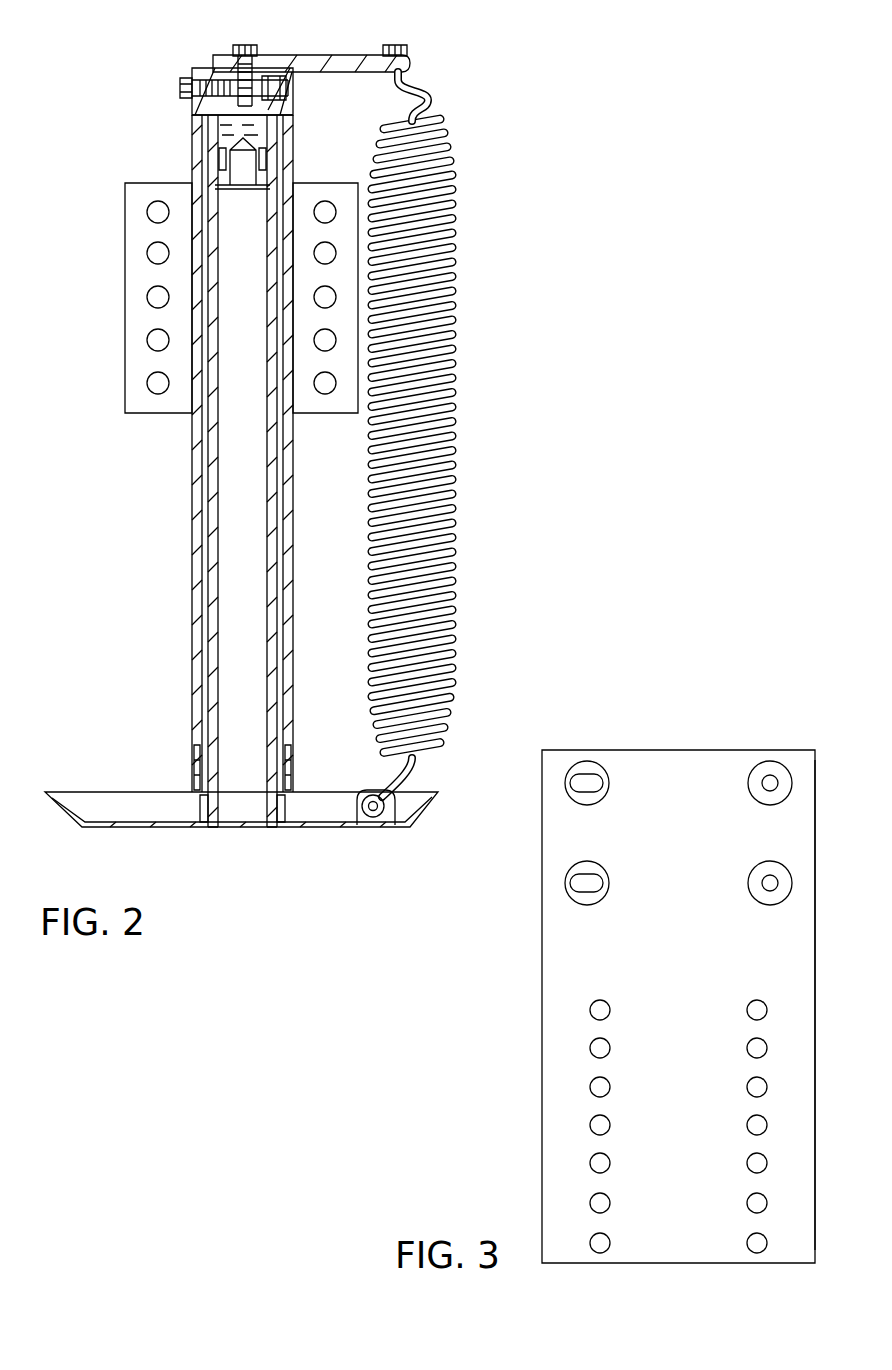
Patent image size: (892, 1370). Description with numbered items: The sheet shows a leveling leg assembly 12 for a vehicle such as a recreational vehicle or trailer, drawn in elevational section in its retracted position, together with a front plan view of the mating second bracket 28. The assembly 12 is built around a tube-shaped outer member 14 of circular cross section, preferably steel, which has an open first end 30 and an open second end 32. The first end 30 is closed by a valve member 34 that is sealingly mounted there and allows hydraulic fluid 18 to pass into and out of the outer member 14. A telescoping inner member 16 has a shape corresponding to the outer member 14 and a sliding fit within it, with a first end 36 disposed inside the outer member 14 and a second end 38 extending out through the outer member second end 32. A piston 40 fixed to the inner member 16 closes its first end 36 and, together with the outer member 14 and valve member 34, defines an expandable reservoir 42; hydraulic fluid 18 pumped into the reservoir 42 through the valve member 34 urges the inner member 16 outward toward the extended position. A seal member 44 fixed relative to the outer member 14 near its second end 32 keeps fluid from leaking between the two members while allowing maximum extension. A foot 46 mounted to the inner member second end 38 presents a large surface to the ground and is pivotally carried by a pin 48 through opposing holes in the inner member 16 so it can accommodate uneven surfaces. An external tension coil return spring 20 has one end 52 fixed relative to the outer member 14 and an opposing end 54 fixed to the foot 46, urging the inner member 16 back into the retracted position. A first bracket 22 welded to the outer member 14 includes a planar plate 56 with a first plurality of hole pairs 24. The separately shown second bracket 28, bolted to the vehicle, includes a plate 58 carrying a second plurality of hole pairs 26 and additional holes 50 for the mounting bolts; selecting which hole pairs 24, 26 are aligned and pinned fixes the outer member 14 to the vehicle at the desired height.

In FIG. 2, the leveling leg assembly 12 is at (104, 86).
In FIG. 2, the outer member 14 is at (192, 525).
In FIG. 2, the inner member 16 is at (238, 567).
In FIG. 2, the hydraulic fluid 18 is at (207, 134).
In FIG. 2, the return spring 20 is at (450, 418).
In FIG. 2, the first bracket 22 is at (134, 414).
In FIG. 2, the hole pairs 24 is at (147, 253).
In FIG. 3, the hole pairs 26 is at (610, 1010).
In FIG. 3, the second bracket 28 is at (818, 751).
In FIG. 2, the first end 30 is at (196, 112).
In FIG. 2, the second end 32 is at (193, 787).
In FIG. 2, the valve member 34 is at (210, 76).
In FIG. 2, the first end 36 is at (268, 178).
In FIG. 2, the second end 38 is at (200, 806).
In FIG. 2, the piston 40 is at (246, 184).
In FIG. 2, the expandable reservoir 42 is at (257, 108).
In FIG. 2, the seal member 44 is at (287, 772).
In FIG. 2, the foot 46 is at (432, 801).
In FIG. 2, the pin 48 is at (284, 800).
In FIG. 3, the additional holes 50 is at (748, 783).
In FIG. 2, the spring end 52 is at (409, 90).
In FIG. 2, the spring end 54 is at (412, 770).
In FIG. 2, the plate 56 is at (343, 414).
In FIG. 3, the plate 58 is at (803, 822).